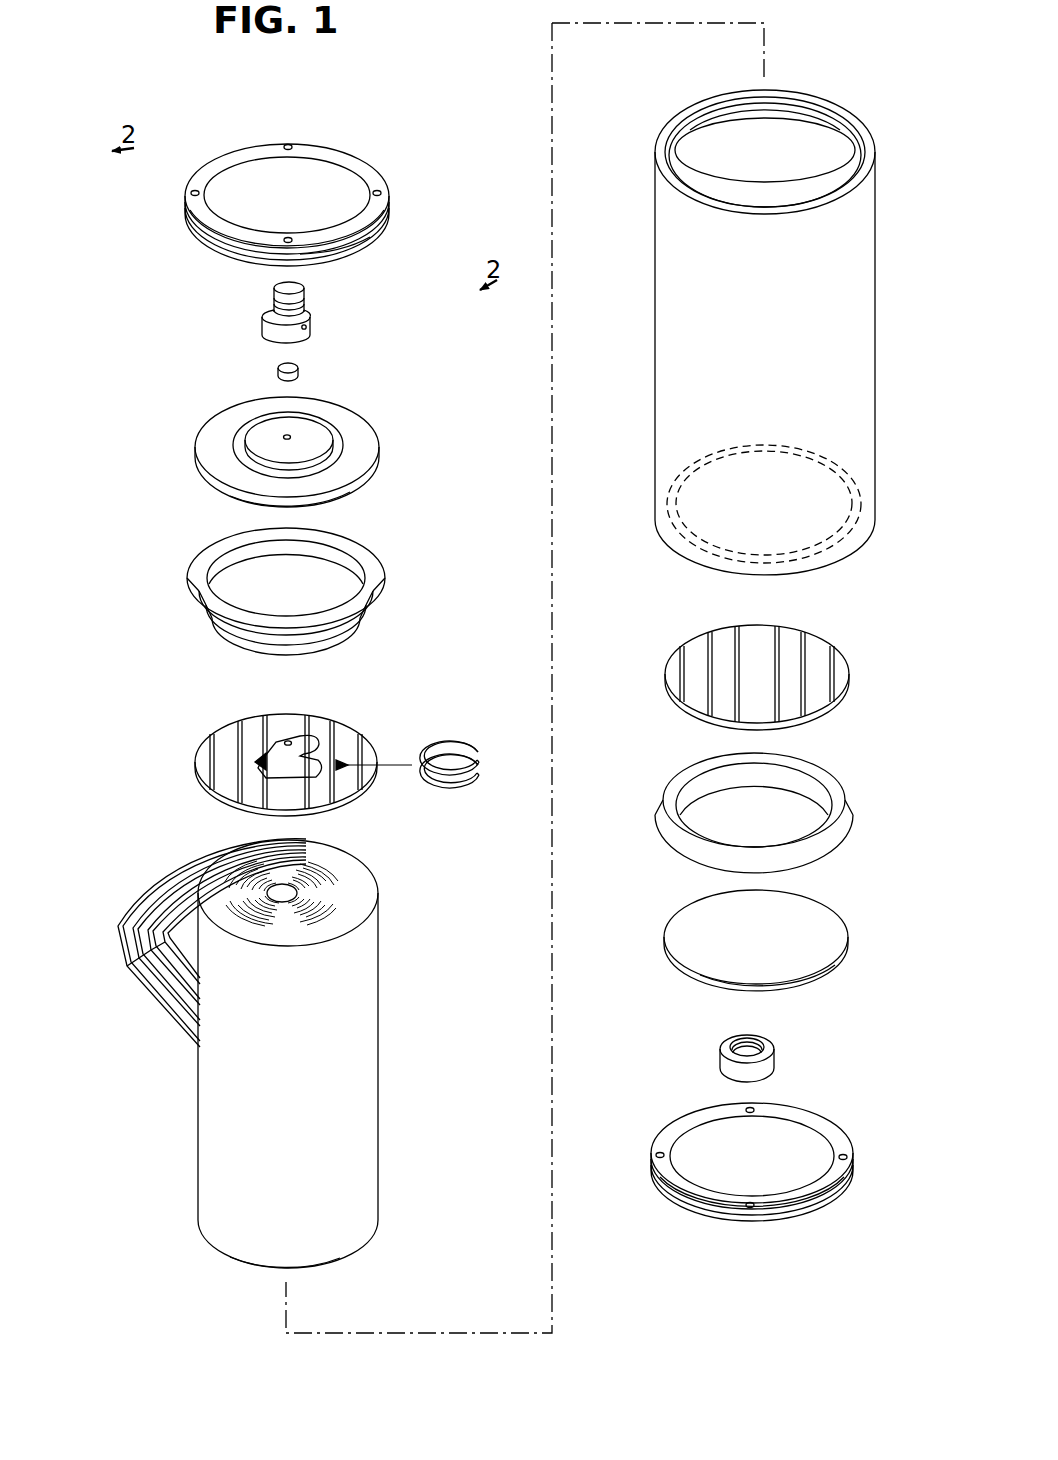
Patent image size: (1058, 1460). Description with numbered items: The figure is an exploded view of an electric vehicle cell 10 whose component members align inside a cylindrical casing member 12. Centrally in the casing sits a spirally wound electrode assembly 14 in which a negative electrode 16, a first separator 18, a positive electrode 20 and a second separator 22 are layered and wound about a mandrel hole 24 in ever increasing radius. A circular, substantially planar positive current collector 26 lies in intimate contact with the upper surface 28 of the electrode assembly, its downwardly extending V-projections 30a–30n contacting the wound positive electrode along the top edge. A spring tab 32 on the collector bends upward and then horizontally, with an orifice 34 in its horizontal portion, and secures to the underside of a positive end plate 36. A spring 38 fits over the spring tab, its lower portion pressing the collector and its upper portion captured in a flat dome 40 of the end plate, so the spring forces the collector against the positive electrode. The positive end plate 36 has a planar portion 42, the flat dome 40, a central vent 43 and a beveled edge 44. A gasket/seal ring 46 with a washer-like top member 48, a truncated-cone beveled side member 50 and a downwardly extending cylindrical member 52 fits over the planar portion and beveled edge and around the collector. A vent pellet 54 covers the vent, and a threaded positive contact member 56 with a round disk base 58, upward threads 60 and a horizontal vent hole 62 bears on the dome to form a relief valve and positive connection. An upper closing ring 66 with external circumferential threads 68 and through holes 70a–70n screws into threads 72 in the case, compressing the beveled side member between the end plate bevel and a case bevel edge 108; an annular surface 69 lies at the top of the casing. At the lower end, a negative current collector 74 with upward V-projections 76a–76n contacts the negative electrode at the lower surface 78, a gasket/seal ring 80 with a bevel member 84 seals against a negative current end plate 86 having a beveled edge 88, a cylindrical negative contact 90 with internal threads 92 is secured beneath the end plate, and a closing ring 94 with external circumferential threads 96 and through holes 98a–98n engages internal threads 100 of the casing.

The electric vehicle cell 10 is at (140, 102).
The casing member 12 is at (742, 310).
The spirally wound electrode assembly 14 is at (329, 1074).
The negative electrode 16 is at (118, 940).
The first separator 18 is at (140, 960).
The positive electrode 20 is at (150, 983).
The second separator 22 is at (163, 1000).
The mandrel hole 24 is at (288, 888).
The positive current collector 26 is at (271, 759).
The upper surface 28 is at (372, 889).
The V-projection 30a is at (212, 797).
The V-projection 30n is at (360, 797).
The spring tab 32 is at (315, 742).
The orifice 34 is at (286, 739).
The positive end plate 36 is at (277, 446).
The spring 38 is at (455, 742).
The flat dome 40 is at (304, 422).
The planar portion 42 is at (372, 452).
The vent 43 is at (284, 433).
The beveled edge 44 is at (355, 489).
The gasket/seal ring 46 is at (272, 601).
The washer-like top member 48 is at (363, 563).
The beveled side member 50 is at (325, 638).
The cylindrical member 52 is at (218, 637).
The vent pellet 54 is at (297, 366).
The threaded positive contact member 56 is at (300, 308).
The round disk base 58 is at (262, 328).
The threads 60 is at (273, 292).
The vent hole 62 is at (307, 326).
The upper closing ring 66 is at (163, 210).
The external circumferential threads 68 is at (372, 239).
The annular surface 69 is at (670, 128).
The through hole 70a is at (193, 189).
The through hole 70n is at (381, 190).
The threads 72 is at (790, 108).
The negative current collector 74 is at (749, 669).
The V-projection 76a is at (684, 648).
The V-projection 76n is at (832, 645).
The lower surface 78 is at (338, 1274).
The gasket/seal ring 80 is at (743, 813).
The bevel member 84 is at (850, 820).
The negative current end plate 86 is at (732, 949).
The beveled edge 88 is at (832, 970).
The cylindrical negative contact 90 is at (729, 1047).
The internal threads 92 is at (762, 1041).
The closing ring 94 is at (750, 1190).
The external circumferential threads 96 is at (716, 1224).
The through hole 98a is at (658, 1150).
The through hole 98n is at (848, 1155).
The internal threads 100 is at (772, 446).
The case bevel edge 108 is at (820, 130).